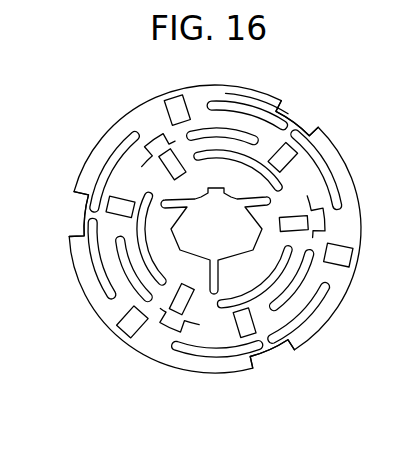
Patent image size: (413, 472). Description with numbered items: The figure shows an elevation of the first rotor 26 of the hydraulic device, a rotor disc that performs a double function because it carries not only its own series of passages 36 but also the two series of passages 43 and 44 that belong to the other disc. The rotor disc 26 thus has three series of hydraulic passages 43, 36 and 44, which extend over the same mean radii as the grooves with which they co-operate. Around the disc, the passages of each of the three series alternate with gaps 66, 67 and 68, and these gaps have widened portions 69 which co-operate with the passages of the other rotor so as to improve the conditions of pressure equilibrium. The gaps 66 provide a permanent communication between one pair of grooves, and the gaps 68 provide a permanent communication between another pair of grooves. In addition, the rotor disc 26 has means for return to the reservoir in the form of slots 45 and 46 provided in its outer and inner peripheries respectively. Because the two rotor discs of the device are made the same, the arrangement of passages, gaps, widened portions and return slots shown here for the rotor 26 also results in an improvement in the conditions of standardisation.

The first rotor 26 is at (139, 106).
The series of passages 36 is at (296, 156).
The series of passages 43 is at (187, 73).
The series of passages 44 is at (163, 157).
The slot 45 is at (303, 67).
The slot 46 is at (268, 201).
The gaps 66 is at (101, 177).
The gaps 67 is at (212, 131).
The gaps 68 is at (283, 188).
The widened portions 69 is at (82, 203).